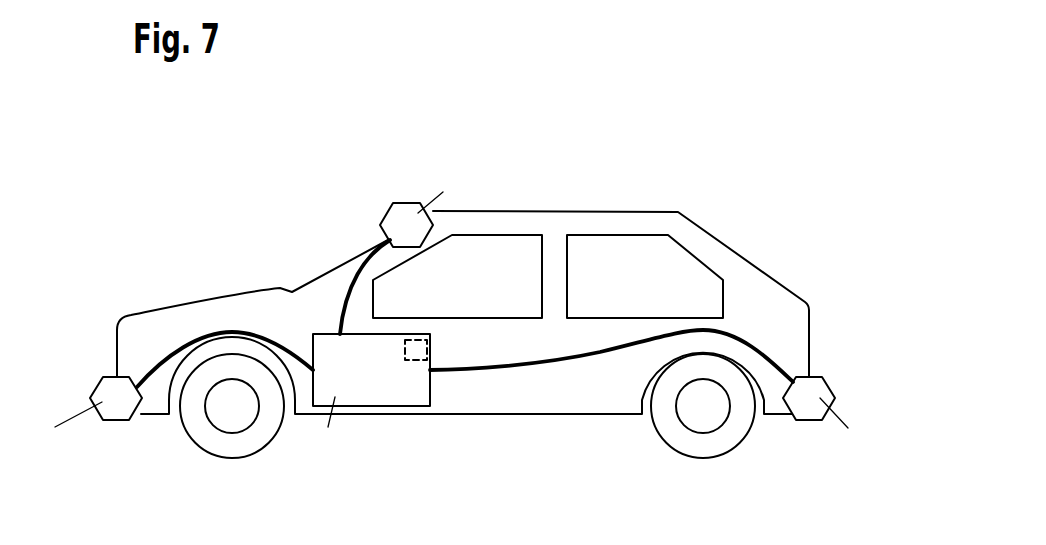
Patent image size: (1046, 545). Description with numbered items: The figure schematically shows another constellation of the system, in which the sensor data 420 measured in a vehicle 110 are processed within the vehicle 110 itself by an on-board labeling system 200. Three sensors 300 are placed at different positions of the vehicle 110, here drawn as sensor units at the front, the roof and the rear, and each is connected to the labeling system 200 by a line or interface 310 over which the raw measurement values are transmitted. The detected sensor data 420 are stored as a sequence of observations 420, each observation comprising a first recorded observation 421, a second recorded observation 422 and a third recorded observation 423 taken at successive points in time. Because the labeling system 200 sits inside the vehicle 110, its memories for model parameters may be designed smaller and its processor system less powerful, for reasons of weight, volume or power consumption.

The vehicle 110 is at (243, 181).
The sensor set 300 is at (408, 212).
The line or interface 310 is at (222, 332).
The labeling system 200 is at (393, 385).
The sensor data / observation 420 is at (428, 342).
The first recorded observation 421 is at (465, 417).
The second recorded observation 422 is at (465, 417).
The third recorded observation 423 is at (415, 368).